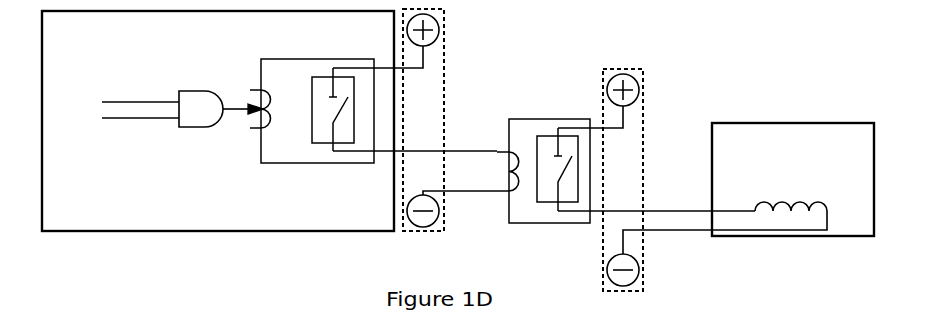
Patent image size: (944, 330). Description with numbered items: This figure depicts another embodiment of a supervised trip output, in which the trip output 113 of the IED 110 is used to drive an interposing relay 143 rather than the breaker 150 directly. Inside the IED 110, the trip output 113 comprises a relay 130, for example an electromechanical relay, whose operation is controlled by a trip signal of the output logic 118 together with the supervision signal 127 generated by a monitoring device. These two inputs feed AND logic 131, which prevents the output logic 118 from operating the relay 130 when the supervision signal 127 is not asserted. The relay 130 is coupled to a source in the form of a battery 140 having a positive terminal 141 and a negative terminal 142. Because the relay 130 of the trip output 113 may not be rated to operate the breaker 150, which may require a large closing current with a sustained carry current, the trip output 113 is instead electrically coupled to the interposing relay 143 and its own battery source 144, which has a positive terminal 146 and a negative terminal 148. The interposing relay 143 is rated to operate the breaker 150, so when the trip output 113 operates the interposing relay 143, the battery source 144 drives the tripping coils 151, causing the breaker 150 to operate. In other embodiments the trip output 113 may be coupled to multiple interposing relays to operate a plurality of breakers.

The IED 110 is at (118, 45).
The trip output 113 is at (300, 83).
The output logic 118 is at (144, 102).
The supervision signal 127 is at (147, 118).
The relay 130 is at (318, 77).
The AND logic 131 is at (215, 118).
The battery 140 is at (444, 80).
The positive terminal 141 is at (438, 20).
The negative terminal 142 is at (435, 220).
The interposing relay 143 is at (517, 119).
The battery source 144 is at (645, 117).
The positive terminal 146 is at (638, 80).
The negative terminal 148 is at (638, 266).
The breaker 150 is at (820, 143).
The tripping coils 151 is at (824, 200).